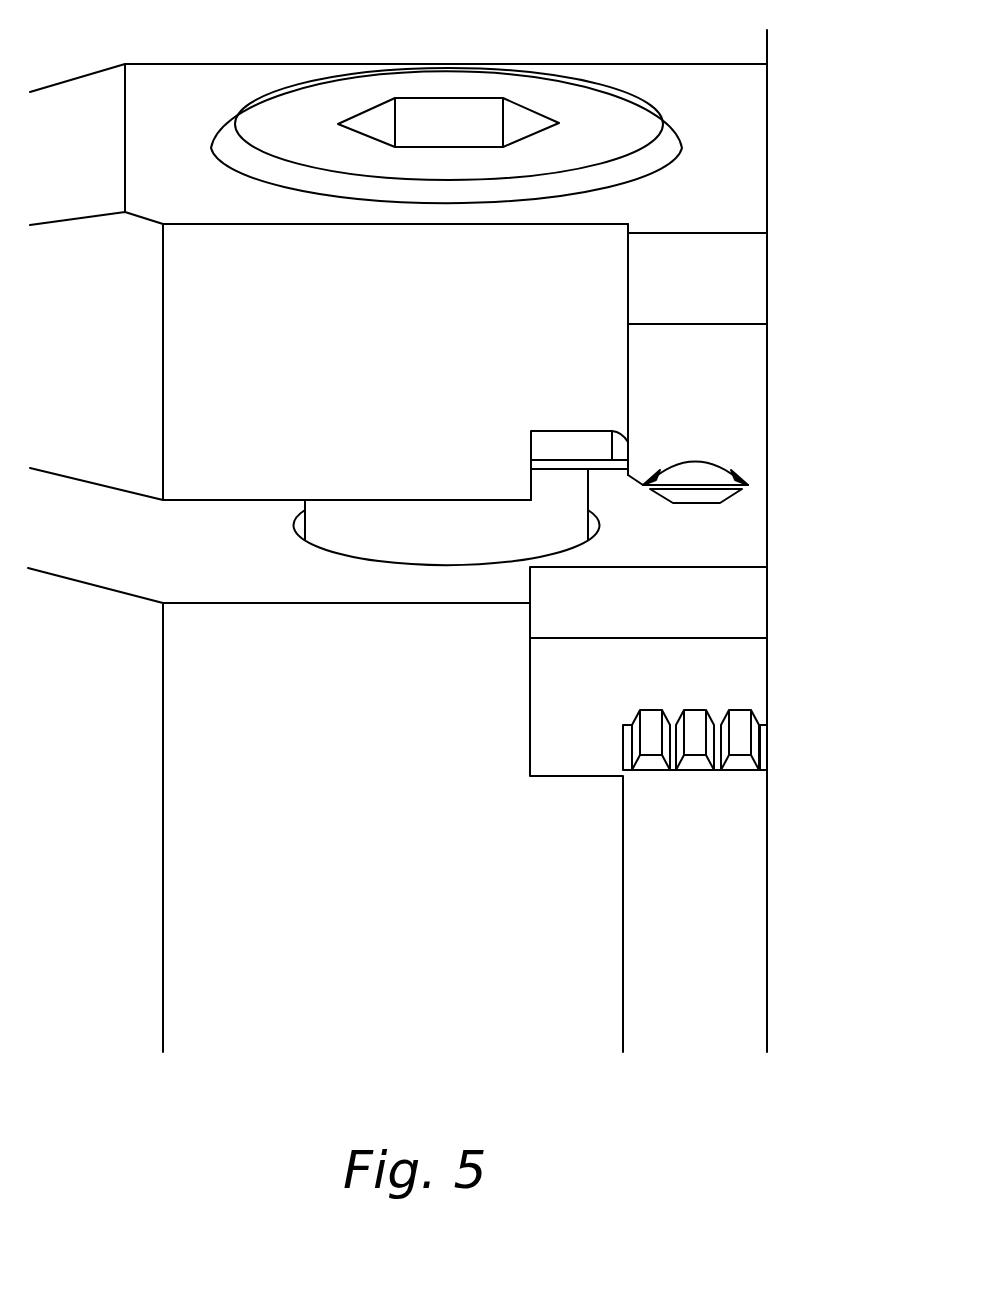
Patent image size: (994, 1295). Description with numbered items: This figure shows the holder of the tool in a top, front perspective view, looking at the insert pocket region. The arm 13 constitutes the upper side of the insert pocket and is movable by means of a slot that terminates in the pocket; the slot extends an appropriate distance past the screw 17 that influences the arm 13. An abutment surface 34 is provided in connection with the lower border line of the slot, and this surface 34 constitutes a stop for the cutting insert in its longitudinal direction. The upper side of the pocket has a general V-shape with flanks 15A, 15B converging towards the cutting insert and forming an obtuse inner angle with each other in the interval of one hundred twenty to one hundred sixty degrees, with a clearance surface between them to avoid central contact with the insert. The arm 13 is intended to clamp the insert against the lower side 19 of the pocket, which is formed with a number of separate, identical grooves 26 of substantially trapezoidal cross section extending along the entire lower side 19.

The arm 13 is at (738, 365).
The screw 17 is at (583, 113).
The flank 15A is at (655, 486).
The flank 15B is at (753, 478).
The abutment surface 34 is at (730, 603).
The lower side 19 is at (660, 698).
The groove 26 is at (720, 747).